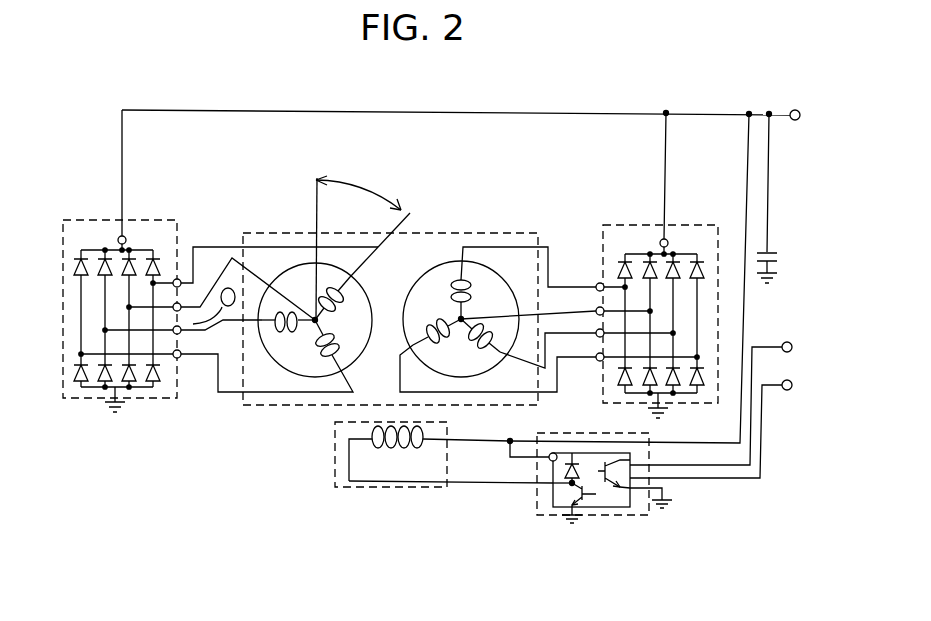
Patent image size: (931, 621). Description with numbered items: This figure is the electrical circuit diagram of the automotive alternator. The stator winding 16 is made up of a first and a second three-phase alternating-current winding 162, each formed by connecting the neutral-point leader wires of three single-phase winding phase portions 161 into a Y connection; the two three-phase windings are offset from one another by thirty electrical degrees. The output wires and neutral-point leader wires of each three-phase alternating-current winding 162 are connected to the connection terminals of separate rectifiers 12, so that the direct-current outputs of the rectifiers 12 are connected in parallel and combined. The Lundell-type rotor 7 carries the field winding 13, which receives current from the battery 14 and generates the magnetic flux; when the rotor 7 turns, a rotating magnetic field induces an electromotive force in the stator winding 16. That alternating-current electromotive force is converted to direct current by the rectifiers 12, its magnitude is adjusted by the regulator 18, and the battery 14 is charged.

The rectifiers 12 is at (160, 218).
The stator winding 16 is at (441, 232).
The single-phase winding phase portions 161 is at (265, 366).
The three-phase alternating-current winding 162 is at (310, 377).
The battery 14 is at (779, 244).
The rotor 7 is at (333, 479).
The field winding 13 is at (405, 455).
The regulator 18 is at (535, 497).